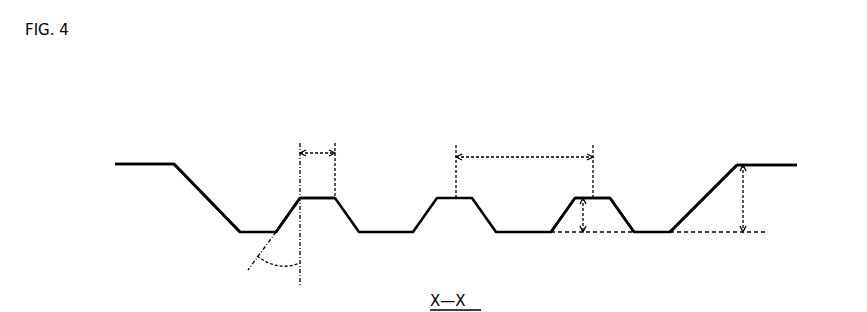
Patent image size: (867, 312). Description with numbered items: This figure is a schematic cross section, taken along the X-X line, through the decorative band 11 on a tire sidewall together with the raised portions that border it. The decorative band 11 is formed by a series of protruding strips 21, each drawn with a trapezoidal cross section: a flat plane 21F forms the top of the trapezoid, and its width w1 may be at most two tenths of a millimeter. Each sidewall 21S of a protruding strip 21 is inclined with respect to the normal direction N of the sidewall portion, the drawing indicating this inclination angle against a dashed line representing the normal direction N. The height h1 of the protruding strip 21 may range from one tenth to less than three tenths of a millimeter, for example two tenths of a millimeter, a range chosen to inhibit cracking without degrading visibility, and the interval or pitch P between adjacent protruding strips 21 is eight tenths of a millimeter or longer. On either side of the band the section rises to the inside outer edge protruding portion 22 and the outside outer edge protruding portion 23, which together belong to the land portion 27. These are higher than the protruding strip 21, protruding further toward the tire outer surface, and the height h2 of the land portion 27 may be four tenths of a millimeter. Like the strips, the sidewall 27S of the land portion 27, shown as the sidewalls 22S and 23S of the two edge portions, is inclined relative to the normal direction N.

The decorative band 11 is at (568, 135).
The protruding strip 21 is at (597, 205).
The sidewall of the protruding strip 21S is at (285, 217).
The plane forming the top of the trapezoidal cross section 21F is at (327, 197).
The inside outer edge protruding portion 22 is at (153, 141).
The land portion 27 is at (130, 178).
The sidewall of the inside outer edge protruding portion 22S is at (228, 162).
The sidewall of the land portion 27S is at (203, 193).
The outside outer edge protruding portion 23 is at (761, 176).
The sidewall of the outside outer edge protruding portion 23S is at (712, 190).
The normal direction of the sidewall portion N is at (298, 180).
The width of the plane forming the top w1 is at (317, 165).
The interval (pitch) between protruding strips P is at (524, 166).
The height of the protruding strip h1 is at (581, 229).
The height of the land portion h2 is at (658, 198).